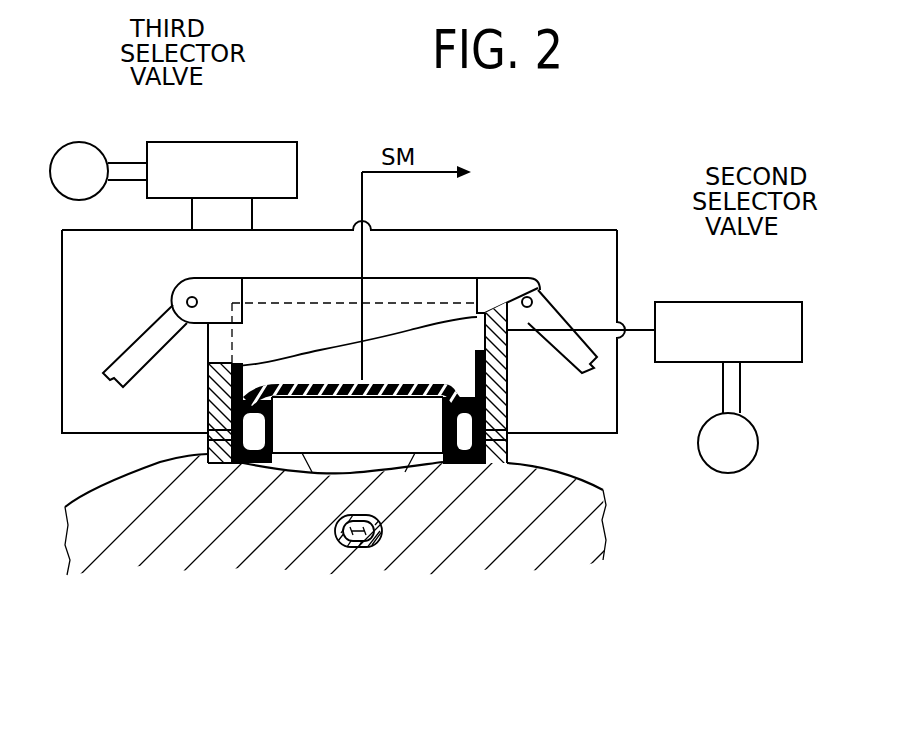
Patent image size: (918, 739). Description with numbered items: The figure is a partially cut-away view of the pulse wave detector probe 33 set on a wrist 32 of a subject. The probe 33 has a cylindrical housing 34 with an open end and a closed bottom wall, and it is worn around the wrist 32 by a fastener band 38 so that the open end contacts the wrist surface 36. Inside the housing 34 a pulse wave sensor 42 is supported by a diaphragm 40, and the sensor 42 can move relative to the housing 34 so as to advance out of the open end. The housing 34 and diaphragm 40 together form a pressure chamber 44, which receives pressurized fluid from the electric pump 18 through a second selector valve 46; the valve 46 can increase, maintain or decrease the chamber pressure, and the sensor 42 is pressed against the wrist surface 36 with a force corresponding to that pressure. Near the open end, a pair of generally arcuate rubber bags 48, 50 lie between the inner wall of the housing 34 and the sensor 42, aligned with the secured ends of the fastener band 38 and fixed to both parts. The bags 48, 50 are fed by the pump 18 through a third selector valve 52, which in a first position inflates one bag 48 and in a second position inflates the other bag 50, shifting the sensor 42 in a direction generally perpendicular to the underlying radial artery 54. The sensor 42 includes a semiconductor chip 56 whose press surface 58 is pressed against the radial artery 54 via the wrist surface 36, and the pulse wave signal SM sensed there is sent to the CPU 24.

The electric pump 18 is at (75, 148).
The CPU 24 is at (480, 172).
The wrist 32 is at (372, 528).
The pulse wave detector probe 33 is at (168, 278).
The cylindrical housing 34 is at (215, 393).
The wrist surface 36 is at (92, 485).
The fastener band 38 is at (127, 358).
The diaphragm 40 is at (460, 398).
The pulse wave sensor 42 is at (292, 485).
The pressure chamber 44 is at (405, 371).
The second selector valve 46 is at (773, 315).
The rubber bag 48 is at (253, 467).
The rubber bag 50 is at (460, 467).
The third selector valve 52 is at (178, 148).
The radial artery 54 is at (357, 548).
The semiconductor chip 56 is at (330, 467).
The press surface 58 is at (390, 472).